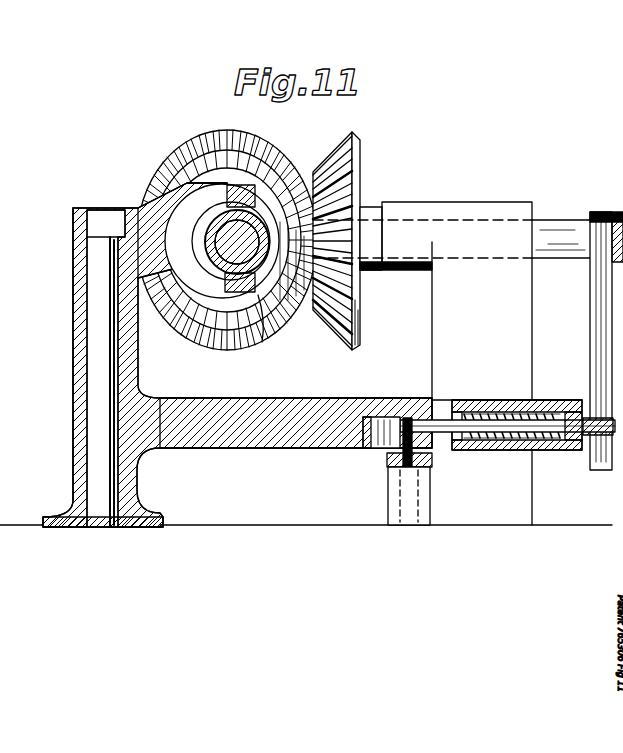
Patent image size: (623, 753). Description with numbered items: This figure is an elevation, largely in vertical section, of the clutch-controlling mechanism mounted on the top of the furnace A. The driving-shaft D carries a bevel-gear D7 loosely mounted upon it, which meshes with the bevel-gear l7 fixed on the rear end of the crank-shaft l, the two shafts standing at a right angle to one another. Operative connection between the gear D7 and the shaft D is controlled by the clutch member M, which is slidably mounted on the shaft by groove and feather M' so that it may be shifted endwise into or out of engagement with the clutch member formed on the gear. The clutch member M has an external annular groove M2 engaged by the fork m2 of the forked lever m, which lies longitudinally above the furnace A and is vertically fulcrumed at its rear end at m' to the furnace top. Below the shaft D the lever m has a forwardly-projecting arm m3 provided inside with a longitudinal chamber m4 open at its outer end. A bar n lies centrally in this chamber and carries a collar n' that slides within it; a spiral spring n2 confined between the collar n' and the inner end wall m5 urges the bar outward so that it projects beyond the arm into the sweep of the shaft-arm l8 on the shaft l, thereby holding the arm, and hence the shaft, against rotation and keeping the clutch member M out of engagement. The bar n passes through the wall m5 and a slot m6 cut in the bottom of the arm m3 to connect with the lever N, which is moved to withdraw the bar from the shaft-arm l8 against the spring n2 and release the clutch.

The bevel-gear D7 is at (196, 140).
The fork m2 is at (172, 162).
The forked lever m is at (229, 355).
The fulcrum m' is at (68, 382).
The forwardly-projecting arm m3 is at (266, 446).
The furnace A is at (199, 526).
The external annular groove M2 is at (242, 228).
The groove and feather M' is at (242, 335).
The clutch member M is at (257, 294).
The driving-shaft D is at (262, 241).
The bevel-gear l7 is at (354, 150).
The crank-shaft l is at (548, 228).
The shaft-arm l8 is at (597, 313).
The bar n is at (521, 455).
The inner end wall m5 is at (447, 410).
The spiral spring n2 is at (498, 412).
The chamber m4 is at (488, 440).
The collar n' is at (582, 401).
The slot m6 is at (366, 435).
The lever N is at (397, 473).